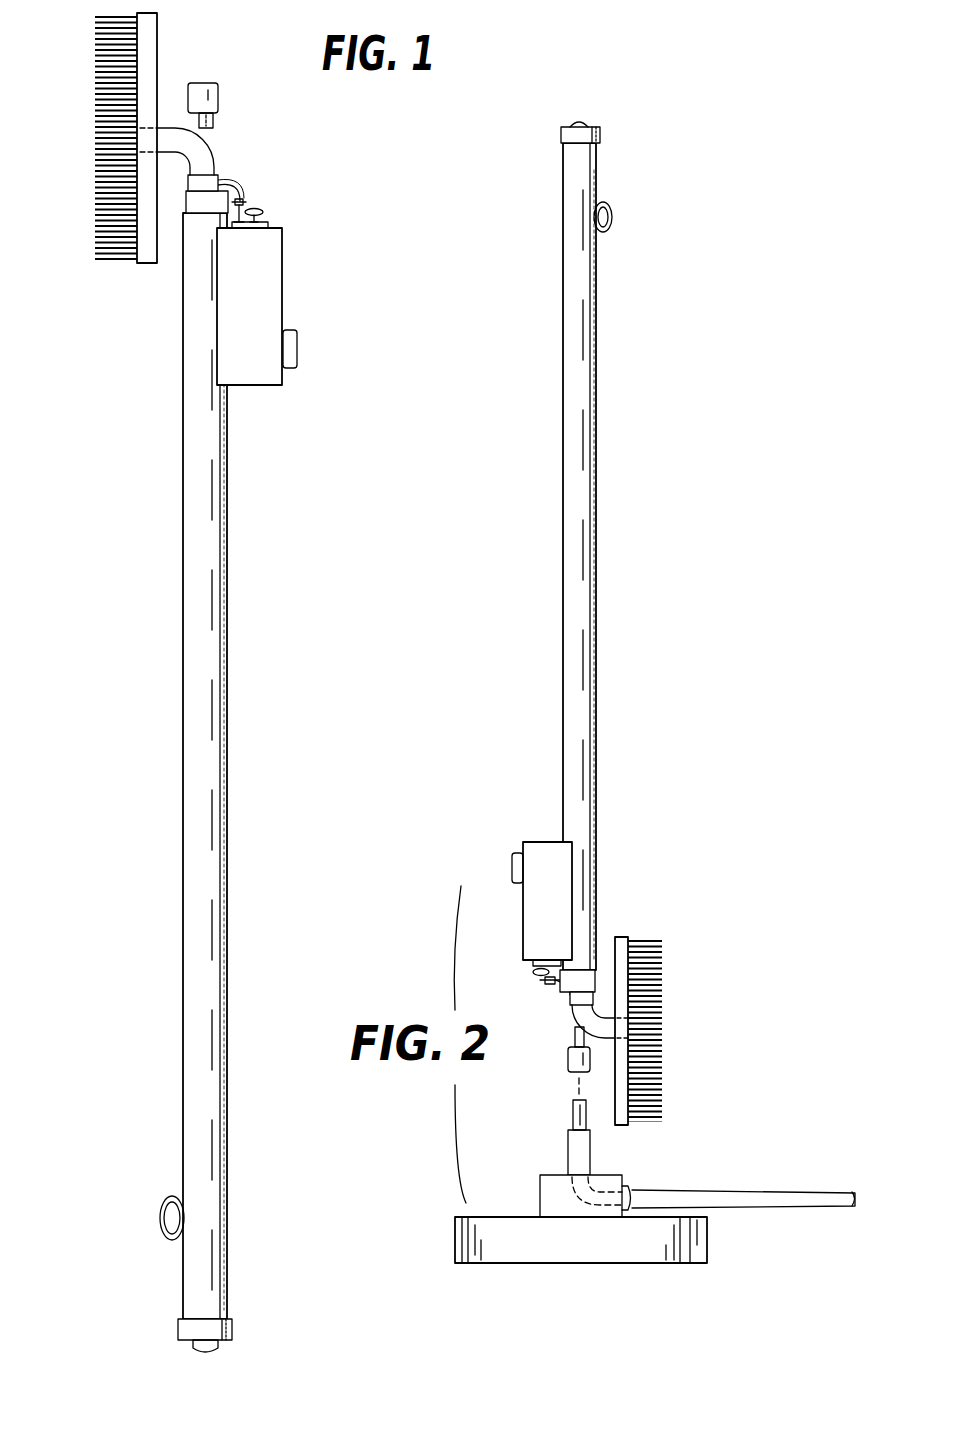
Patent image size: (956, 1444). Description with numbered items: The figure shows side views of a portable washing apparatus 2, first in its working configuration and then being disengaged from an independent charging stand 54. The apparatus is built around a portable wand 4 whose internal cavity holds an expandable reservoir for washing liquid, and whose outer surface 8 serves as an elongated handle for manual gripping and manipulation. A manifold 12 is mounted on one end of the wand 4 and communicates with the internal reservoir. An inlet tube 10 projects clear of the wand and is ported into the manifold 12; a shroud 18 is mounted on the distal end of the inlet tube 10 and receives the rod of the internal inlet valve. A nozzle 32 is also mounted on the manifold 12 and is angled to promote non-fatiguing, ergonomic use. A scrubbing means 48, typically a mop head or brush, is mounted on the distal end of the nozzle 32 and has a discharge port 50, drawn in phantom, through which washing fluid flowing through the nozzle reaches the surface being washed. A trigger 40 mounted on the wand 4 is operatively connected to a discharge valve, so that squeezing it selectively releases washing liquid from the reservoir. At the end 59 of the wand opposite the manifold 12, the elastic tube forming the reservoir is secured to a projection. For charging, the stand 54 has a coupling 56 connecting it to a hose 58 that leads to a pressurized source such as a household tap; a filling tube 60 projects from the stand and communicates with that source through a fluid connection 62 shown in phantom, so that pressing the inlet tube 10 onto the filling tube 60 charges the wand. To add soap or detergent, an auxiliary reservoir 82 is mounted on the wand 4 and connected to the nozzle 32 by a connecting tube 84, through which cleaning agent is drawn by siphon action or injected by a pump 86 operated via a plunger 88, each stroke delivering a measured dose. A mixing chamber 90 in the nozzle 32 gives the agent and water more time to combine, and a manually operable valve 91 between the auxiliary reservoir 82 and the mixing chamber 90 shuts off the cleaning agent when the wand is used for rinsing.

In FIG. 1, the washing apparatus 2 is at (362, 191).
In FIG. 2, the washing apparatus 2 is at (745, 872).
In FIG. 1, the portable wand 4 is at (228, 585).
In FIG. 2, the portable wand 4 is at (597, 585).
In FIG. 1, the outer surface 8 is at (210, 716).
In FIG. 2, the outer surface 8 is at (585, 498).
In FIG. 1, the inlet tube 10 is at (208, 128).
In FIG. 2, the inlet tube 10 is at (577, 1035).
In FIG. 1, the manifold 12 is at (207, 207).
In FIG. 2, the manifold 12 is at (580, 972).
In FIG. 1, the shroud 18 is at (215, 88).
In FIG. 2, the shroud 18 is at (568, 1058).
In FIG. 1, the nozzle 32 is at (175, 128).
In FIG. 2, the nozzle 32 is at (615, 1021).
In FIG. 1, the trigger 40 is at (167, 1232).
In FIG. 2, the trigger 40 is at (612, 217).
In FIG. 1, the scrubbing means 48 is at (125, 262).
In FIG. 2, the scrubbing means 48 is at (663, 1080).
In FIG. 1, the discharge port 50 is at (143, 140).
In FIG. 2, the discharge port 50 is at (625, 1030).
In FIG. 2, the charging stand 54 is at (545, 1243).
In FIG. 2, the coupling 56 is at (627, 1185).
In FIG. 2, the hose 58 is at (753, 1195).
In FIG. 1, the end of wand 59 is at (232, 1330).
In FIG. 2, the end of wand 59 is at (600, 133).
In FIG. 2, the filling tube 60 is at (573, 1117).
In FIG. 2, the fluid connection 62 is at (607, 1207).
In FIG. 1, the auxiliary reservoir 82 is at (272, 308).
In FIG. 2, the auxiliary reservoir 82 is at (552, 842).
In FIG. 1, the connecting tube 84 is at (240, 187).
In FIG. 1, the pump 86 is at (268, 228).
In FIG. 2, the pump 86 is at (543, 966).
In FIG. 1, the plunger 88 is at (267, 218).
In FIG. 2, the plunger 88 is at (538, 972).
In FIG. 1, the mixing chamber 90 is at (212, 182).
In FIG. 2, the mixing chamber 90 is at (597, 994).
In FIG. 1, the manually operable valve 91 is at (263, 200).
In FIG. 2, the manually operable valve 91 is at (540, 983).